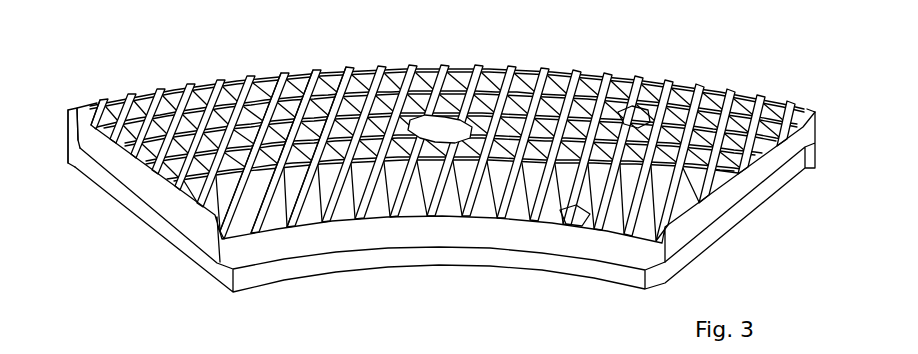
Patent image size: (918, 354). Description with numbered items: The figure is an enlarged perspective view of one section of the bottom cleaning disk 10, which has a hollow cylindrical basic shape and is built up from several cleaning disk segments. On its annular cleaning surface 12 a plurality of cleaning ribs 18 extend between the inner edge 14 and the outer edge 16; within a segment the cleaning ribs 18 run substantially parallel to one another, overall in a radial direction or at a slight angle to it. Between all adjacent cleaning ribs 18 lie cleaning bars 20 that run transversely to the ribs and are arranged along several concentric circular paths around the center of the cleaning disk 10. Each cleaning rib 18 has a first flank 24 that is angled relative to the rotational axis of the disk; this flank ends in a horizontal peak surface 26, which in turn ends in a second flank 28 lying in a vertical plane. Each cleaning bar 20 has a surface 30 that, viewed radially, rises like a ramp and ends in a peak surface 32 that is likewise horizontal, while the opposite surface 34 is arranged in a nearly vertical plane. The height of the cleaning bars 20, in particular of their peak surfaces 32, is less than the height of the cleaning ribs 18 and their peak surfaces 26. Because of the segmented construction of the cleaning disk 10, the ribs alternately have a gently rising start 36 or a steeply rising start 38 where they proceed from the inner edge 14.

The bottom cleaning disk 10 is at (755, 197).
The annular cleaning surface 12 is at (707, 100).
The inner edge 14 is at (547, 262).
The outer edge 16 is at (557, 73).
The cleaning ribs 18 is at (608, 90).
The cleaning bars 20 is at (628, 107).
The first flank 24 is at (338, 113).
The horizontal peak surface 26 is at (322, 113).
The second flank 28 is at (298, 102).
The ramp-like rising surface 30 is at (112, 143).
The peak surface 32 is at (107, 127).
The opposite surface 34 is at (90, 137).
The gently rising start 36 is at (510, 203).
The steeply rising start 38 is at (575, 215).